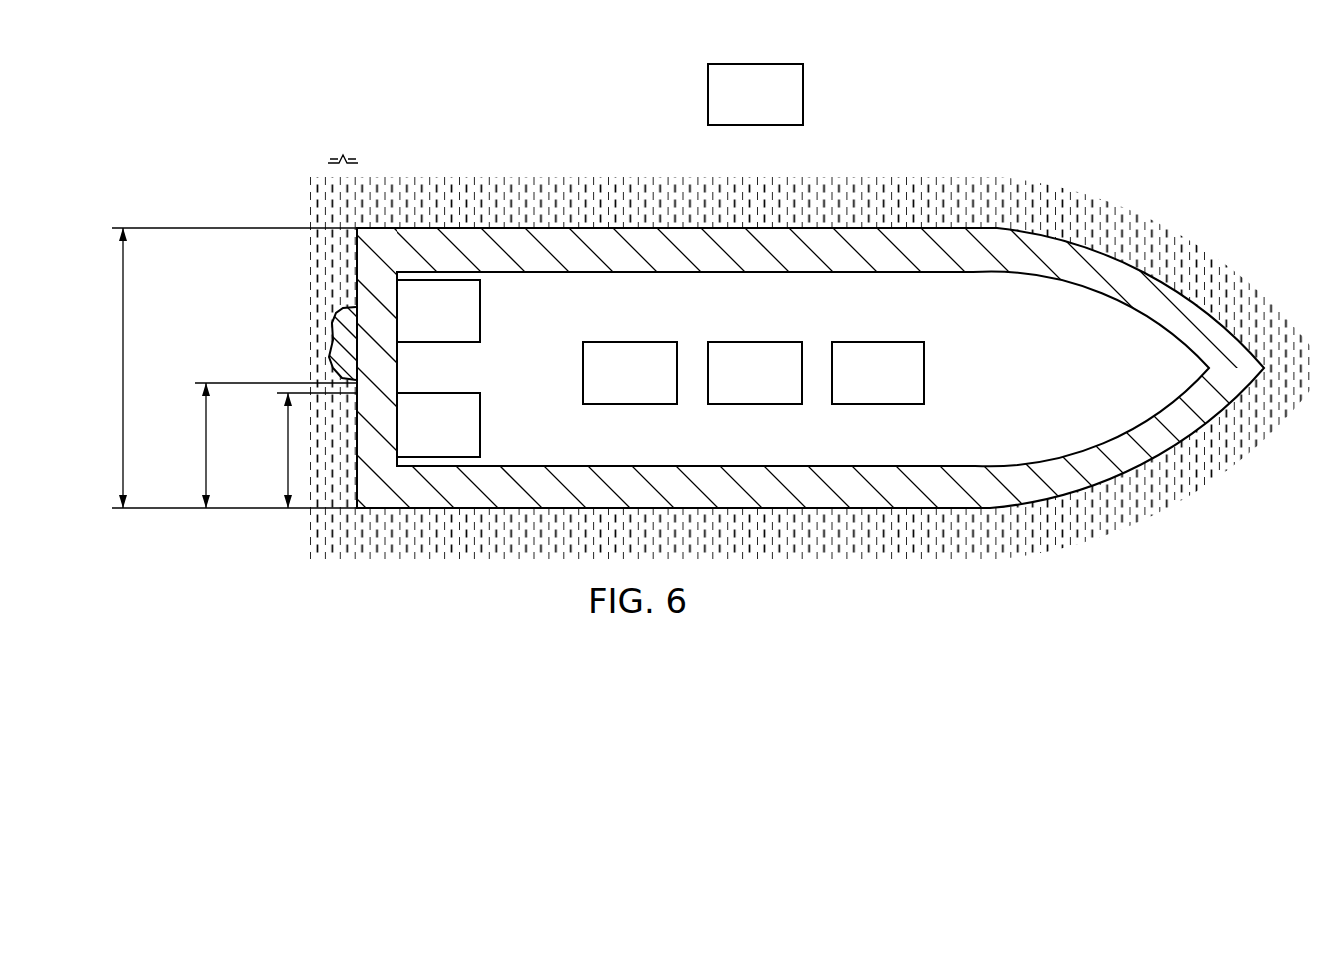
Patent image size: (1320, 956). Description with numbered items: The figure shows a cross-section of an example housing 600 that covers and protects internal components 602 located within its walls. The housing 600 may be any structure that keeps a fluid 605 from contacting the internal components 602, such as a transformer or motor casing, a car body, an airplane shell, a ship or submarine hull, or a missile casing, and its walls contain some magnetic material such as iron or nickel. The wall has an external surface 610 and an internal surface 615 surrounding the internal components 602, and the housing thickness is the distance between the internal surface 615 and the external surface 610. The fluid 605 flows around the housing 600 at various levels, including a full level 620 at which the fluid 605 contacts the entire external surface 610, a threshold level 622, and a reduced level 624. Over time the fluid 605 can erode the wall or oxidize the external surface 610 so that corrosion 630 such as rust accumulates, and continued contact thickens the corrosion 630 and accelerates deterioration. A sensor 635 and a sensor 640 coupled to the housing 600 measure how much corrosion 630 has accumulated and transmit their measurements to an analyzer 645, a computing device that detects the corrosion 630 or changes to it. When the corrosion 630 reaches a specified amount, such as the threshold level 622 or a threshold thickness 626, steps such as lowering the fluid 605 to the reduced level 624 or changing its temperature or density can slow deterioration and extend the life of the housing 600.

The housing 600 is at (1150, 111).
The internal components 602 is at (651, 386).
The fluid 605 is at (550, 182).
The external surface 610 is at (955, 524).
The internal surface 615 is at (984, 286).
The full level 620 is at (123, 370).
The threshold level 622 is at (206, 445).
The reduced level 624 is at (288, 453).
The threshold thickness 626 is at (344, 143).
The corrosion 630 is at (330, 344).
The sensor 635 is at (459, 324).
The sensor 640 is at (459, 438).
The analyzer 645 is at (776, 108).